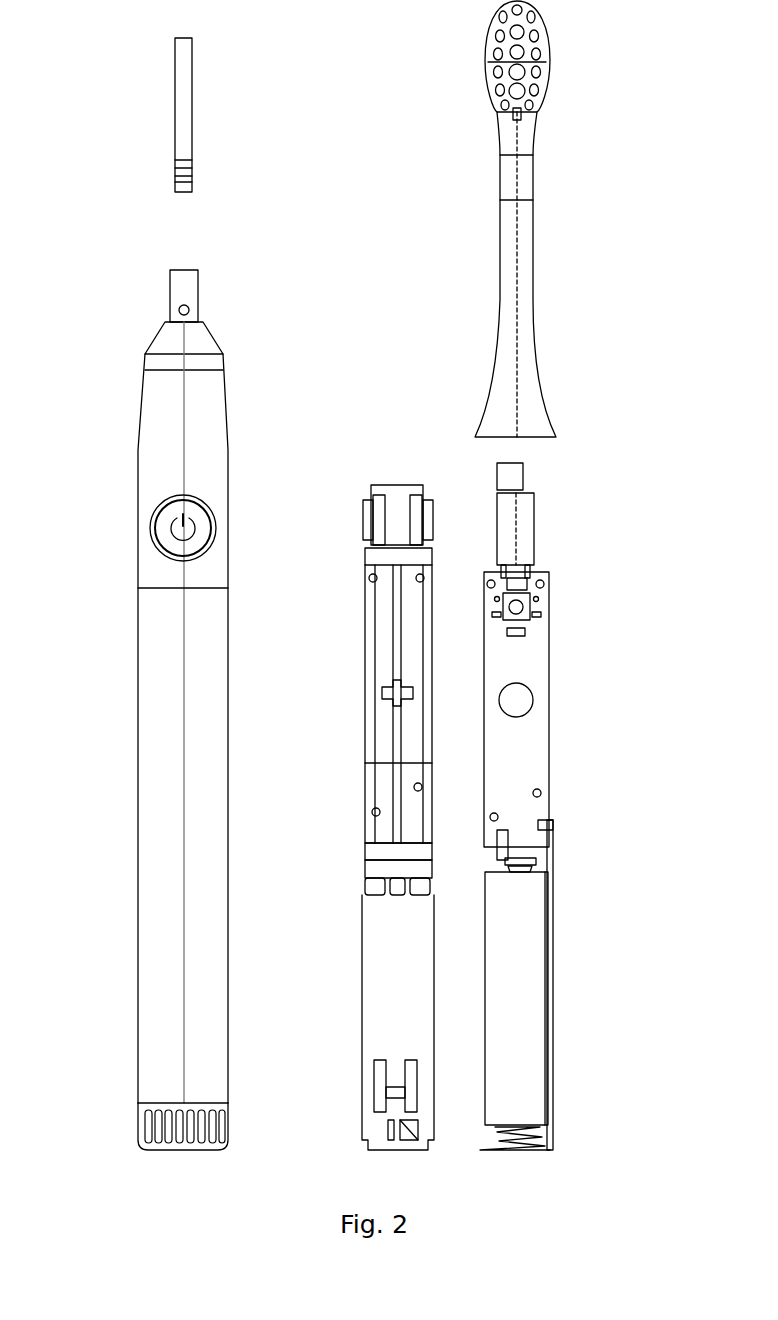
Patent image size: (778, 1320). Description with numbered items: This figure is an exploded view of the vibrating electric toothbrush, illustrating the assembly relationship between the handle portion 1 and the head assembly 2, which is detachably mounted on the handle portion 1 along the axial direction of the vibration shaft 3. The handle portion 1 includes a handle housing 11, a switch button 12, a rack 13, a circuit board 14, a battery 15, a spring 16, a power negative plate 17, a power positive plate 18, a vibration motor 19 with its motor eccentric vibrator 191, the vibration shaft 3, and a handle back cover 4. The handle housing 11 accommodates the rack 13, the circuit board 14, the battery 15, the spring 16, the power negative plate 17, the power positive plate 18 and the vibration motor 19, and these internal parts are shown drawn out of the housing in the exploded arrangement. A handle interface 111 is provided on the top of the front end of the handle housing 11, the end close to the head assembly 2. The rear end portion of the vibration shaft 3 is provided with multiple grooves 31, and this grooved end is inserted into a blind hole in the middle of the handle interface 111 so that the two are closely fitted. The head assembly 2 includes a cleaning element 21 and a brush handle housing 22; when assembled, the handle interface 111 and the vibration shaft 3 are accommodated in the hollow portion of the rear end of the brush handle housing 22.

The handle portion 1 is at (173, 710).
The handle interface 111 is at (140, 330).
The handle housing 11 is at (158, 663).
The switch button 12 is at (195, 522).
The handle back cover 4 is at (165, 1125).
The vibration shaft 3 is at (192, 115).
The groove of vibration shaft 31 is at (192, 172).
The head assembly 2 is at (526, 219).
The cleaning element 21 is at (517, 52).
The brush handle housing 22 is at (523, 222).
The motor eccentric vibrator 191 is at (510, 480).
The vibration motor 19 is at (523, 535).
The circuit board 14 is at (512, 662).
The rack 13 is at (372, 810).
The power positive plate 18 is at (500, 845).
The power negative plate 17 is at (548, 828).
The battery 15 is at (512, 1032).
The spring 16 is at (513, 1145).